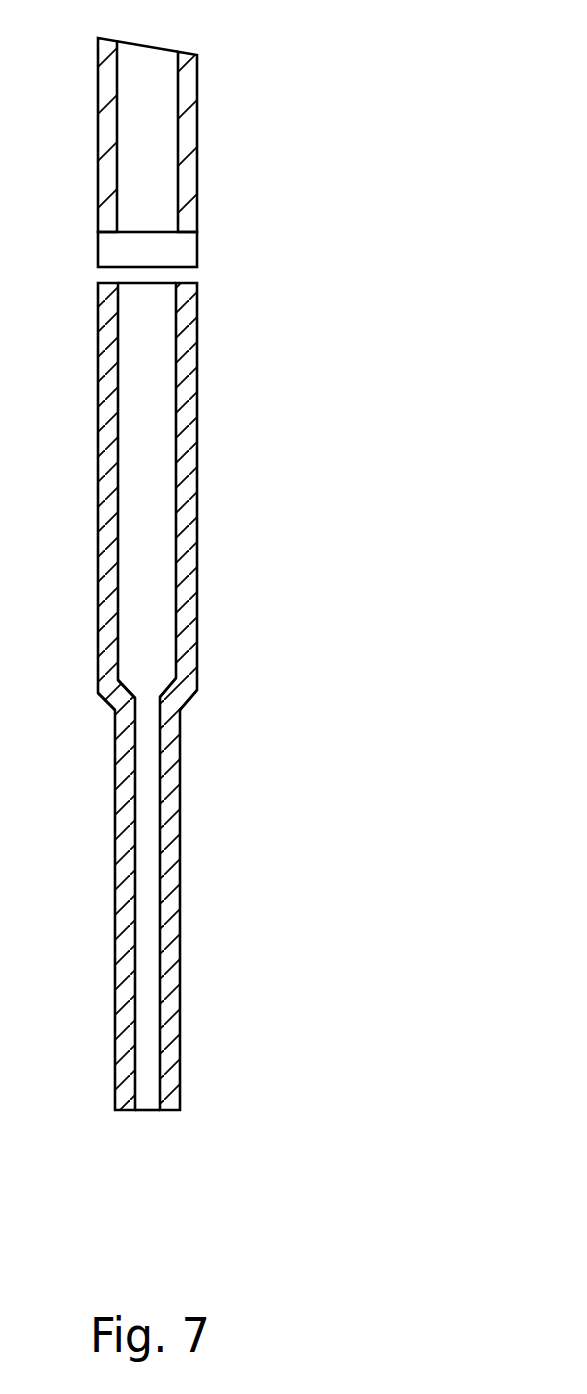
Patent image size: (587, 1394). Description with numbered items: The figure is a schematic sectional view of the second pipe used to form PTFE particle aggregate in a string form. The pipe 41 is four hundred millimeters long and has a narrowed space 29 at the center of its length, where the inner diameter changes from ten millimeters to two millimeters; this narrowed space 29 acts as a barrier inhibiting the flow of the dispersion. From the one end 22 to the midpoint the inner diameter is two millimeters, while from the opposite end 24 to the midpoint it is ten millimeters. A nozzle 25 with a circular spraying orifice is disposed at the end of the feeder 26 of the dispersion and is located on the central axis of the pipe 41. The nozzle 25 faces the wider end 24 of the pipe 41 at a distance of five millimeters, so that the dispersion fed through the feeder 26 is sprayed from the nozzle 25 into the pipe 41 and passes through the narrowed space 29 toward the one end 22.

The one end 22 is at (157, 1112).
The end of the pipe 24 is at (157, 283).
The nozzle 25 is at (170, 243).
The feeder 26 is at (155, 127).
The narrowed space 29 is at (200, 693).
The pipe 41 is at (217, 472).